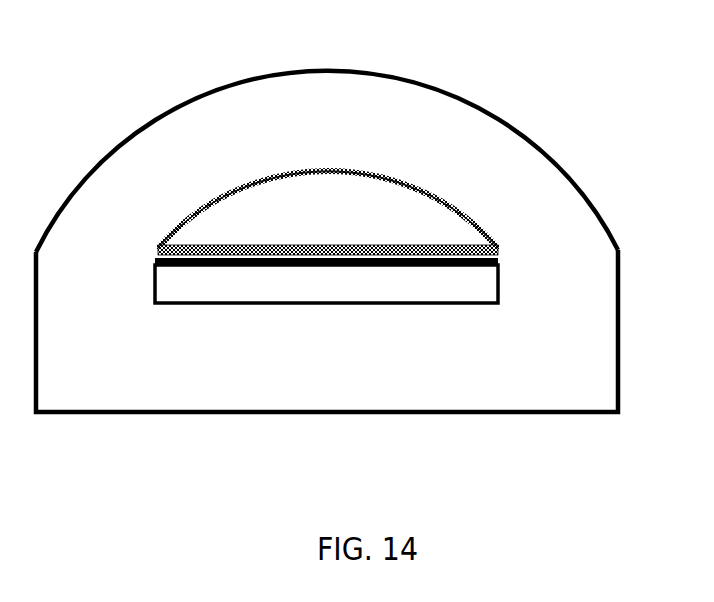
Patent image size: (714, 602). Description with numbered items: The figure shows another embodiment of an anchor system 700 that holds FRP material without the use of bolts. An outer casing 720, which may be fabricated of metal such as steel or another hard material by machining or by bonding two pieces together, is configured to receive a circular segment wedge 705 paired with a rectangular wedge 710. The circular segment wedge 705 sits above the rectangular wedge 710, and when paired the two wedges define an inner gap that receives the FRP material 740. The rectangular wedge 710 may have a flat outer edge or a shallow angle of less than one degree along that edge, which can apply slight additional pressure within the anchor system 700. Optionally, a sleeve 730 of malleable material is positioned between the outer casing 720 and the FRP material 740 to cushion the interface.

The anchor system 700 is at (348, 216).
The outer casing 720 is at (300, 105).
The circular segment wedge 705 is at (222, 217).
The sleeve 730 is at (156, 252).
The FRP material 740 is at (336, 265).
The rectangular wedge 710 is at (202, 285).